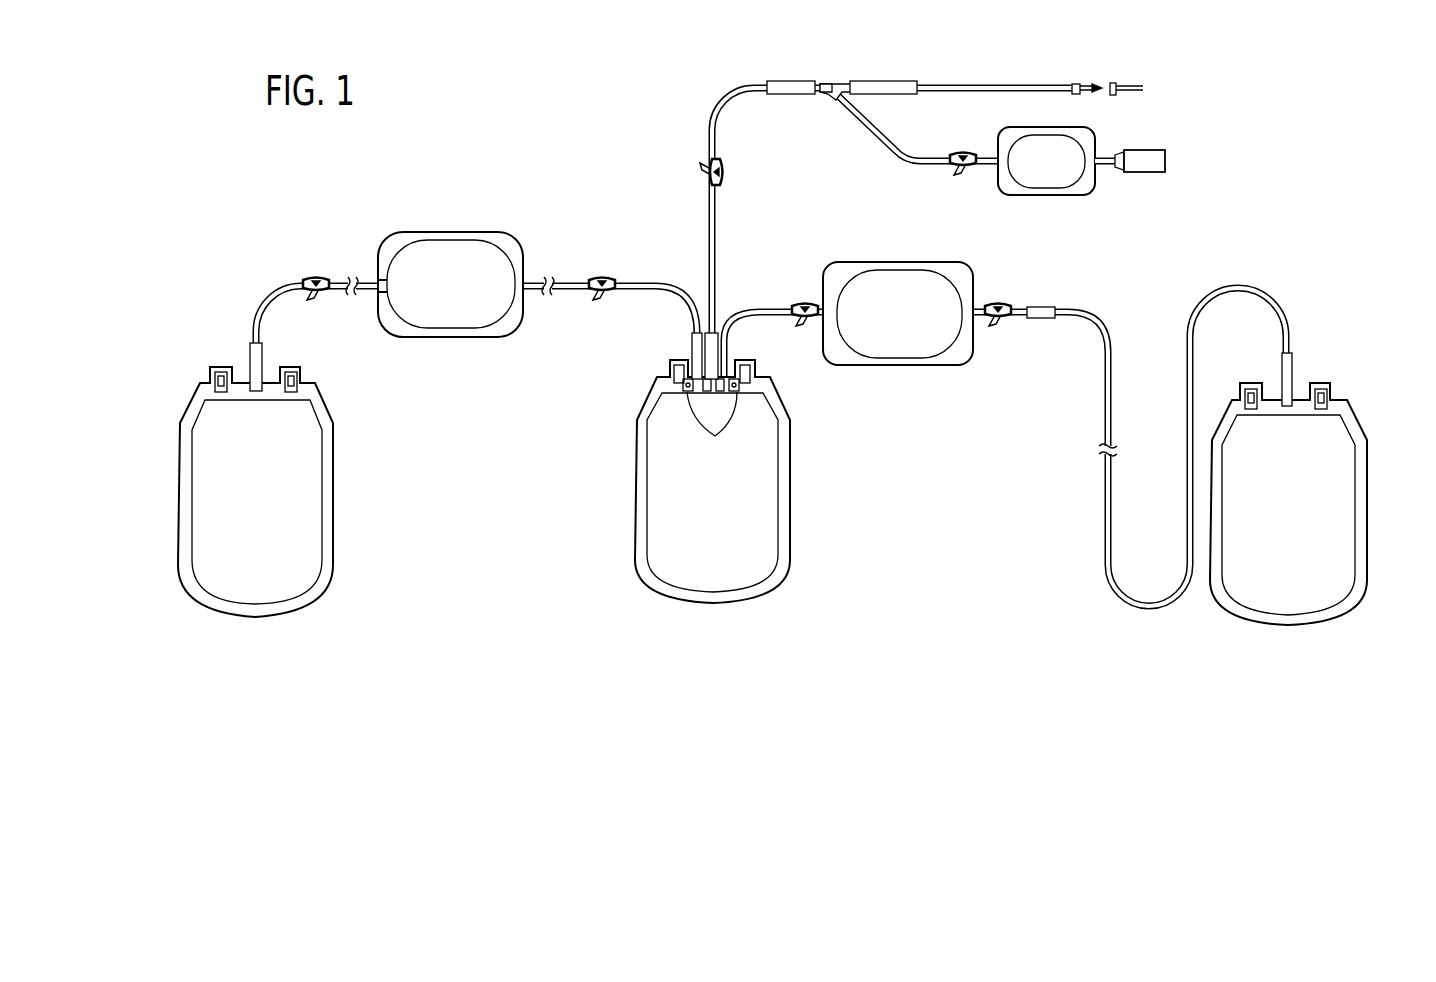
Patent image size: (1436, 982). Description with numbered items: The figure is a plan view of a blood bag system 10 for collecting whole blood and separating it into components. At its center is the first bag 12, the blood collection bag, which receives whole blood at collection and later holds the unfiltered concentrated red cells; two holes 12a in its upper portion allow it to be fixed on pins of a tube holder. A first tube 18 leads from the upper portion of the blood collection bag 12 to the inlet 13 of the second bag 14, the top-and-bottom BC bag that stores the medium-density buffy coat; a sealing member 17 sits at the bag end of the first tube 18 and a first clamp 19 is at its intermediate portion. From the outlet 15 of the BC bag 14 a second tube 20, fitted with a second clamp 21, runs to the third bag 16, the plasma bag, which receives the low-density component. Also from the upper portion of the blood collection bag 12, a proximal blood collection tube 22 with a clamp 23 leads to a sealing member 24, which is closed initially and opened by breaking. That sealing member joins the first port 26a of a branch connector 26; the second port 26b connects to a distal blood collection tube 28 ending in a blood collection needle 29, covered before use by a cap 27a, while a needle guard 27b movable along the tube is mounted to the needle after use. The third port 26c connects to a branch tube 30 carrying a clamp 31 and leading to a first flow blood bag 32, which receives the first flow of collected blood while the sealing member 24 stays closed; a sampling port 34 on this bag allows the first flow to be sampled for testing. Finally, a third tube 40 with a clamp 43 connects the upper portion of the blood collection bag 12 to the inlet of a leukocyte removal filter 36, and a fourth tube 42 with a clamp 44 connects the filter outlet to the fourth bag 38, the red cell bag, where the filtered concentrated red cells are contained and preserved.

The blood bag system 10 is at (1230, 51).
The first bag 12 is at (760, 522).
The holes 12a is at (712, 428).
The inlet 13 is at (524, 273).
The second bag 14 is at (452, 265).
The outlet 15 is at (380, 273).
The third bag 16 is at (306, 526).
The sealing member 17 is at (690, 347).
The first tube 18 is at (645, 283).
The first clamp 19 is at (607, 301).
The second tube 20 is at (253, 321).
The second clamp 21 is at (318, 301).
The blood collection tube 22 is at (711, 108).
The clamp 23 is at (729, 175).
The sealing member 24 is at (792, 87).
The branch connector 26 is at (840, 82).
The first port 26a is at (823, 94).
The second port 26b is at (850, 86).
The third port 26c is at (840, 106).
The cap 27a is at (1130, 85).
The needle guard 27b is at (918, 83).
The blood collection tube 28 is at (978, 87).
The blood collection needle 29 is at (1089, 85).
The branch tube 30 is at (912, 166).
The clamp 31 is at (968, 177).
The first flow blood bag 32 is at (1063, 178).
The sampling port 34 is at (1157, 173).
The filter 36 is at (893, 346).
The fourth bag 38 is at (1335, 445).
The third tube 40 is at (777, 309).
The fourth tube 42 is at (1105, 412).
The clamp 43 is at (807, 327).
The clamp 44 is at (1004, 327).